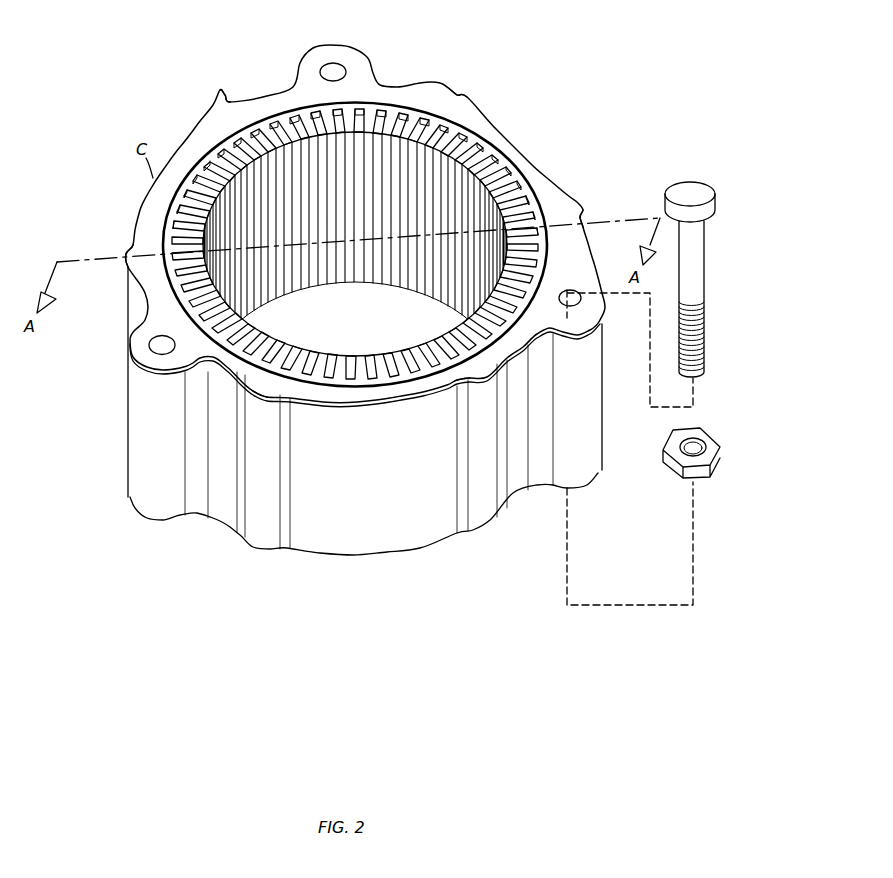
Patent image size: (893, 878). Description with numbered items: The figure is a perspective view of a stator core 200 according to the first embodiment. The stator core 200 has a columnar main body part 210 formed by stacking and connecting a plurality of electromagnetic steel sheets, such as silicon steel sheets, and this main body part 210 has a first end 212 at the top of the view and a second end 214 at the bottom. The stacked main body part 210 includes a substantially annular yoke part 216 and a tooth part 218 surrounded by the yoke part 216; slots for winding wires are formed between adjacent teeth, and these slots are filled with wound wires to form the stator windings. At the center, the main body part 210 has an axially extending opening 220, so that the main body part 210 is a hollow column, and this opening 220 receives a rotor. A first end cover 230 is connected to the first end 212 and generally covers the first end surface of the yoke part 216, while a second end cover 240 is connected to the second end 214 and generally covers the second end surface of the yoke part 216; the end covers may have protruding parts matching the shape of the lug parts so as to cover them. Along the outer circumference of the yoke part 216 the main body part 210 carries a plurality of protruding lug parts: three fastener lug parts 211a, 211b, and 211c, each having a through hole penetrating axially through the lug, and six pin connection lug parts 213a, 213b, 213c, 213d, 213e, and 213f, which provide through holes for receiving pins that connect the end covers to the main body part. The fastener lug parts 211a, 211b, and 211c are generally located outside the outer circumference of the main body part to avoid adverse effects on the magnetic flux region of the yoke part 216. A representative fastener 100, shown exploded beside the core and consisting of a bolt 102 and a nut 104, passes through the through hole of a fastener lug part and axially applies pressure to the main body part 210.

The fastener 100 is at (751, 160).
The bolt 102 is at (697, 194).
The nut 104 is at (698, 480).
The stator core 200 is at (558, 93).
The main body part 210 is at (379, 530).
The first end 212 is at (197, 376).
The second end 214 is at (585, 487).
The yoke part 216 is at (492, 130).
The tooth part 218 is at (375, 110).
The opening 220 is at (314, 324).
The first end cover 230 is at (530, 145).
The second end cover 240 is at (486, 531).
The fastener lug part 211a is at (595, 296).
The fastener lug part 211b is at (138, 344).
The fastener lug part 211c is at (350, 58).
The pin connection lug part 213a is at (268, 384).
The pin connection lug part 213b is at (477, 373).
The pin connection lug part 213c is at (581, 219).
The pin connection lug part 213d is at (448, 84).
The pin connection lug part 213e is at (228, 101).
The pin connection lug part 213f is at (129, 250).